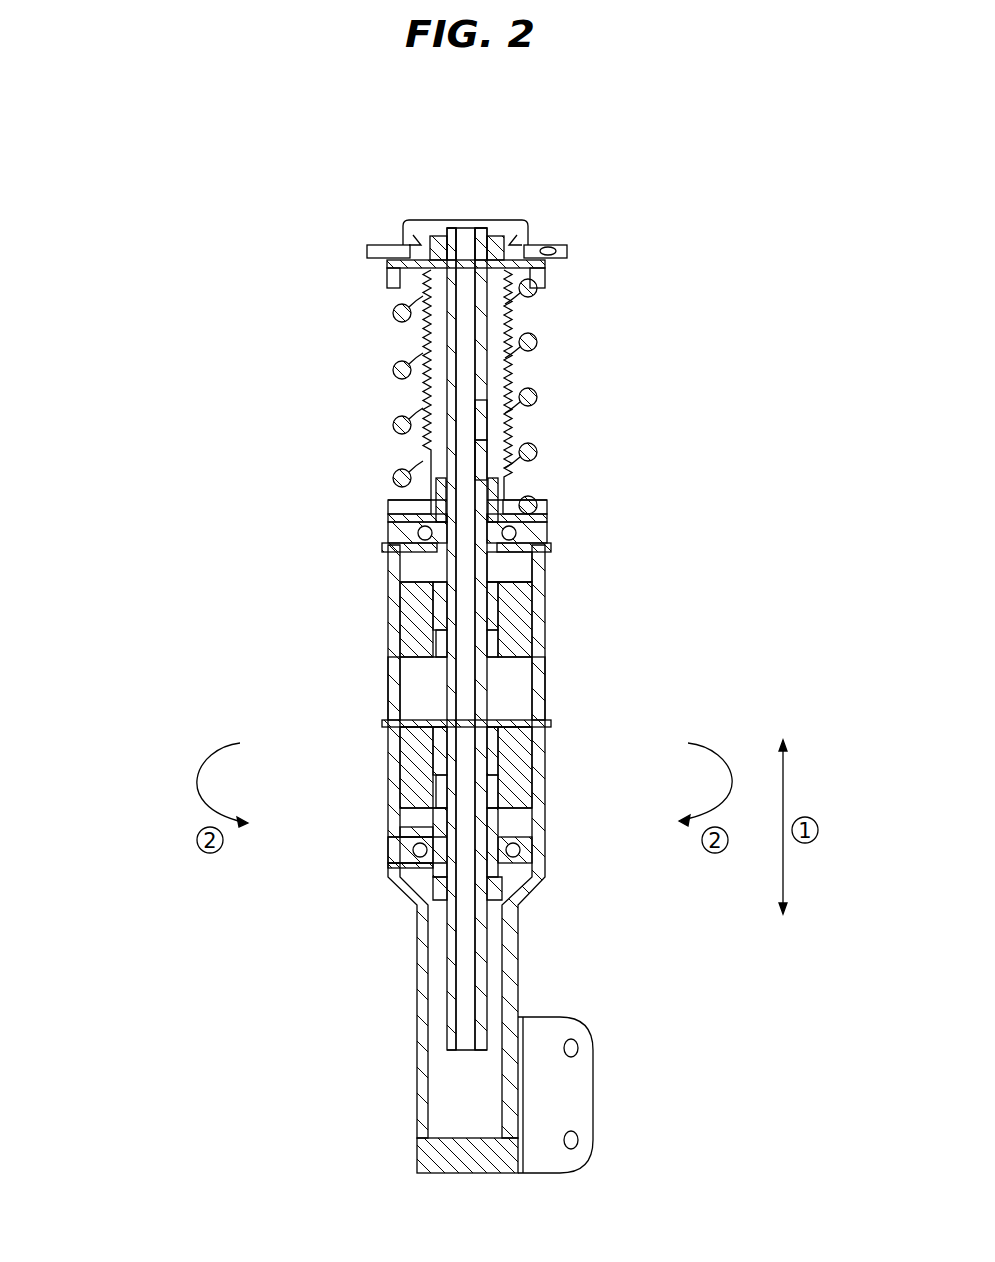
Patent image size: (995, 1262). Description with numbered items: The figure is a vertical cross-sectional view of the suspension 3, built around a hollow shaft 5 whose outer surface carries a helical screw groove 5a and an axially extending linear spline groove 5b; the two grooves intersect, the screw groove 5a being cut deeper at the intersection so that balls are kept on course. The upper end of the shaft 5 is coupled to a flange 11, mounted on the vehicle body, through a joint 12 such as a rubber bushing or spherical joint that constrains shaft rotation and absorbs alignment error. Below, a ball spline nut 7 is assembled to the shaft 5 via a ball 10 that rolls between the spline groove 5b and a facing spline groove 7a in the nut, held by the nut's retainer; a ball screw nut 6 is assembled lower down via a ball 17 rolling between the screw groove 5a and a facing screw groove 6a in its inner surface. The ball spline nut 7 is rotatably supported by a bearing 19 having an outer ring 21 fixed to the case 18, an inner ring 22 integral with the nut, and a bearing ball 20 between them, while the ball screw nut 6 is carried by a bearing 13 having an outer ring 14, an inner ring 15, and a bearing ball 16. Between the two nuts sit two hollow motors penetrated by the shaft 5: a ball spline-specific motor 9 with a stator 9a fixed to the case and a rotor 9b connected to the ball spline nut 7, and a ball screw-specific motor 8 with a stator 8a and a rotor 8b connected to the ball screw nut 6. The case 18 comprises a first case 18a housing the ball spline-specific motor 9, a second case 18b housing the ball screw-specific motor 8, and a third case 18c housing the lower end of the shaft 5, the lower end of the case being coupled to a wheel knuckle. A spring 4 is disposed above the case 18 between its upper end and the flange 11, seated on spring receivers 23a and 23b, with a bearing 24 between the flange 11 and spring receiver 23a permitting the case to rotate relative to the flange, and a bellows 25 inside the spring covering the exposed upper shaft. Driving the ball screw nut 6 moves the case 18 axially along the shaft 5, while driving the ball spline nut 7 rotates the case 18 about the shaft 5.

The suspension 3 is at (456, 104).
The spring 4 is at (538, 345).
The shaft 5 is at (489, 384).
The screw groove 5a is at (489, 432).
The spline groove 5b is at (489, 462).
The ball screw nut 6 is at (495, 818).
The screw groove 6a is at (511, 882).
The ball spline nut 7 is at (520, 558).
The spline groove 7a is at (520, 539).
The ball screw-specific motor 8 is at (597, 730).
The stator 8a is at (520, 750).
The rotor 8b is at (505, 780).
The ball spline-specific motor 9 is at (597, 592).
The stator 9a is at (520, 604).
The rotor 9b is at (520, 630).
The ball 10 is at (500, 491).
The flange 11 is at (530, 240).
The joint 12 is at (485, 244).
The bearing 13 is at (321, 806).
The outer ring 14 is at (406, 849).
The inner ring 15 is at (400, 864).
The bearing ball 16 is at (388, 827).
The ball 17 is at (519, 847).
The case 18 is at (389, 641).
The first case 18a is at (392, 691).
The second case 18b is at (396, 766).
The third case 18c is at (417, 1042).
The bearing 19 is at (321, 495).
The bearing ball 20 is at (388, 518).
The outer ring 21 is at (396, 539).
The inner ring 22 is at (388, 553).
The spring receiver 23a is at (388, 278).
The spring receiver 23b is at (383, 506).
The bearing 24 is at (567, 253).
The bellows 25 is at (422, 397).